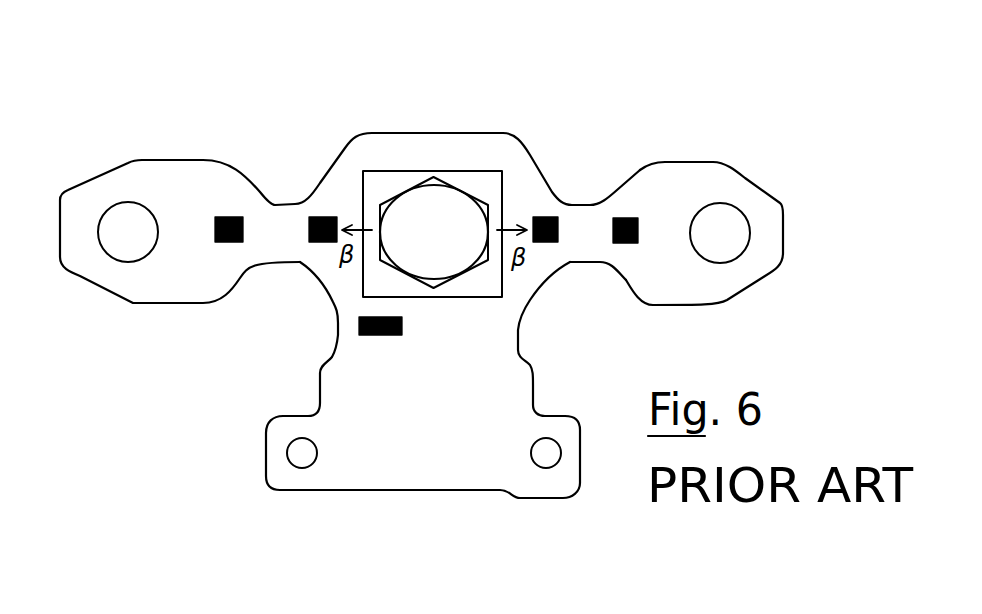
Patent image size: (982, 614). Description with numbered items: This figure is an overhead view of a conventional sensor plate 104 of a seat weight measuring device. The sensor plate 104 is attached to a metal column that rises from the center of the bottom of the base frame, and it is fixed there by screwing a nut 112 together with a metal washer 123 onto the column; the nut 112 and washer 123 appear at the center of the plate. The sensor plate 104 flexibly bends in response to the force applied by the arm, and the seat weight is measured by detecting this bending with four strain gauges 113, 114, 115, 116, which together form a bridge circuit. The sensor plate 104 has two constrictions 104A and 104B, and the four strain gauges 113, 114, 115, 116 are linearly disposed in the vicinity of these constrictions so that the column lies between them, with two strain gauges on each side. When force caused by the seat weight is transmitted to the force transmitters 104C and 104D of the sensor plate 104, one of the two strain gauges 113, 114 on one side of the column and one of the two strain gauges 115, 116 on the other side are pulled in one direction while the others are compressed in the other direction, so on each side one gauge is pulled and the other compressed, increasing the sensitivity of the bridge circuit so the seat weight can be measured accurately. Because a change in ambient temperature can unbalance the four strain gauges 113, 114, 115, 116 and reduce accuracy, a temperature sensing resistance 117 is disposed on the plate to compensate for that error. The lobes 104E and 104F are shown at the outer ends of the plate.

The sensor plate 104 is at (385, 127).
The constriction 104A is at (278, 238).
The constriction 104B is at (593, 217).
The force transmitter 104C is at (90, 263).
The force transmitter 104D is at (750, 267).
The left arm mounting lobe 104E is at (150, 215).
The right arm mounting lobe 104F is at (745, 228).
The nut 112 is at (455, 218).
The metal washer 123 is at (413, 175).
The strain gauge 113 is at (222, 243).
The strain gauge 114 is at (317, 217).
The strain gauge 115 is at (543, 243).
The strain gauge 116 is at (640, 218).
The temperature sensing resistance 117 is at (372, 335).